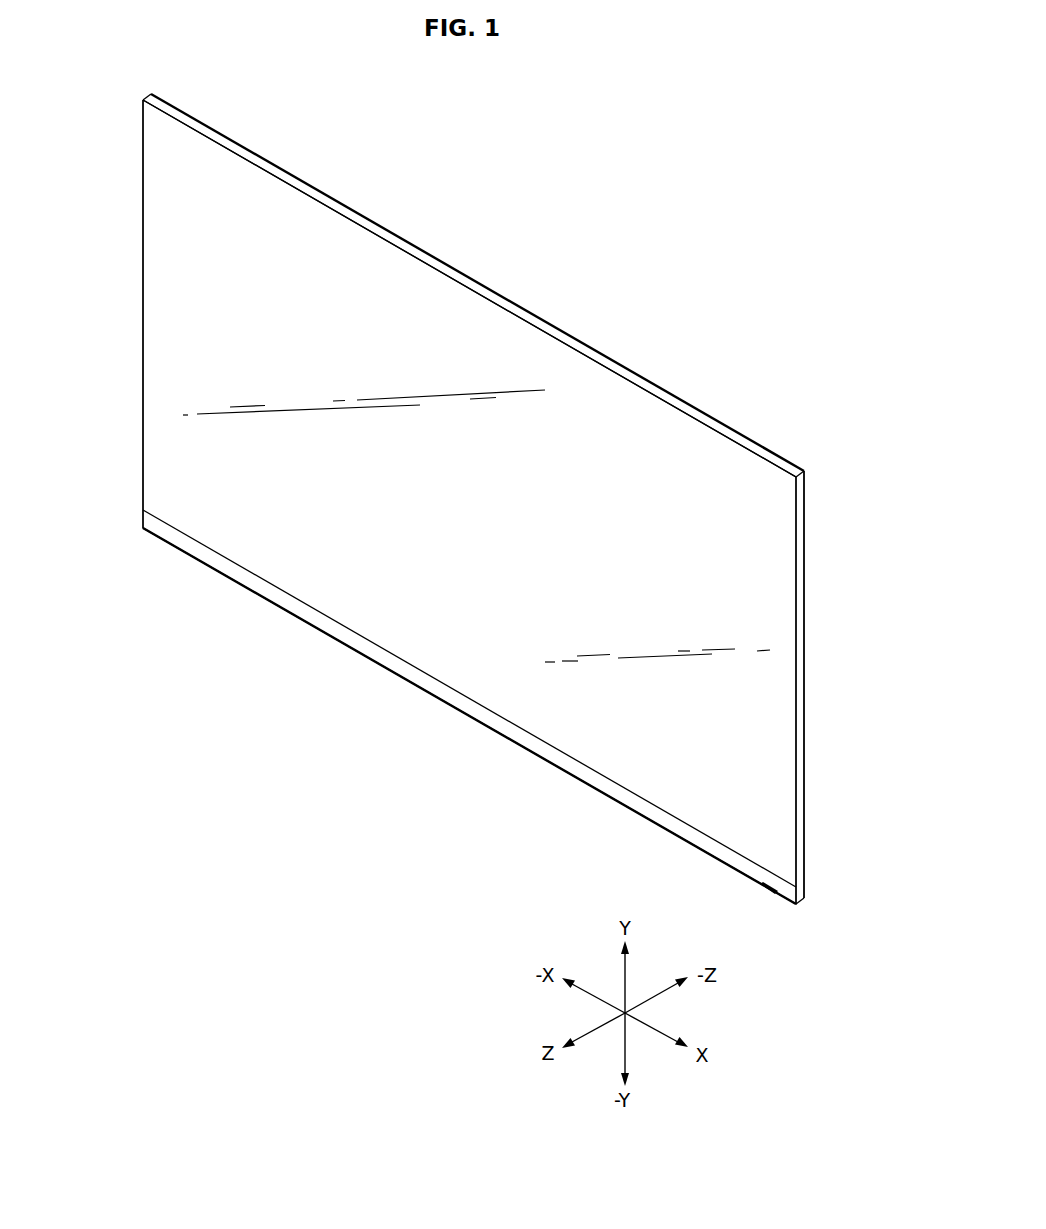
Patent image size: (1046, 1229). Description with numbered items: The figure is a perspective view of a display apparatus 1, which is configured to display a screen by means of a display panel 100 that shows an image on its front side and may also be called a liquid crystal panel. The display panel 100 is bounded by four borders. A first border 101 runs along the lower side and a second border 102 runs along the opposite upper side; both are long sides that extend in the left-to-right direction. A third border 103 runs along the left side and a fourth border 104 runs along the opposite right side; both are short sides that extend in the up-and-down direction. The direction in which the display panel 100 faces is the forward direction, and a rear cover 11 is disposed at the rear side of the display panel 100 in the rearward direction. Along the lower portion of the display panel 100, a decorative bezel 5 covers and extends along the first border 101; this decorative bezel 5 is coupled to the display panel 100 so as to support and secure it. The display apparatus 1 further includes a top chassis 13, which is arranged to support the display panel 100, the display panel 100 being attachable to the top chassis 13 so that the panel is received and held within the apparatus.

The display apparatus 1 is at (461, 499).
The display panel 100 is at (168, 443).
The first border 101 is at (397, 655).
The second border 102 is at (702, 416).
The third border 103 is at (143, 310).
The fourth border 104 is at (796, 545).
The rear cover 11 is at (548, 322).
The top chassis 13 is at (800, 630).
The decorative bezel 5 is at (458, 700).